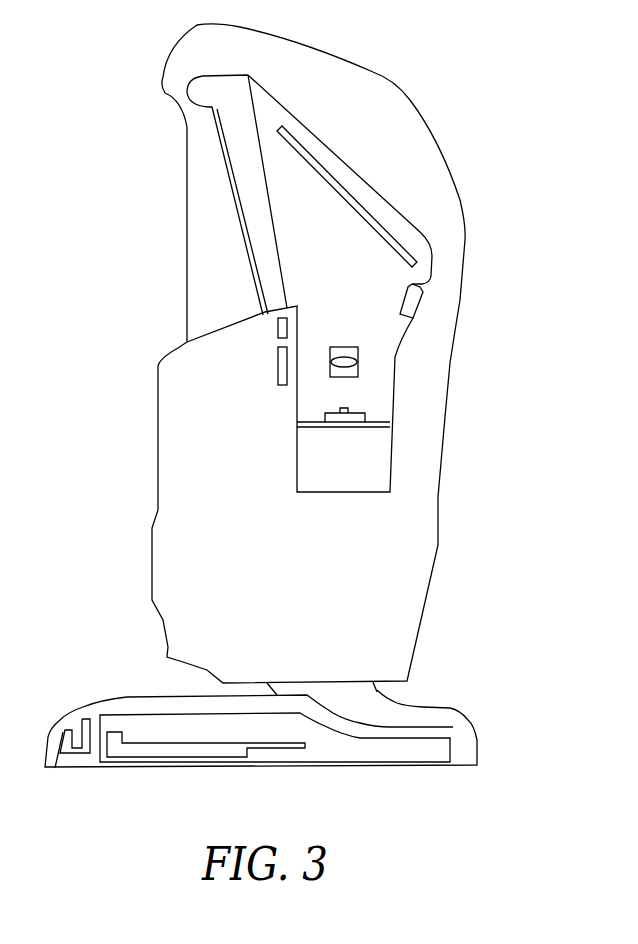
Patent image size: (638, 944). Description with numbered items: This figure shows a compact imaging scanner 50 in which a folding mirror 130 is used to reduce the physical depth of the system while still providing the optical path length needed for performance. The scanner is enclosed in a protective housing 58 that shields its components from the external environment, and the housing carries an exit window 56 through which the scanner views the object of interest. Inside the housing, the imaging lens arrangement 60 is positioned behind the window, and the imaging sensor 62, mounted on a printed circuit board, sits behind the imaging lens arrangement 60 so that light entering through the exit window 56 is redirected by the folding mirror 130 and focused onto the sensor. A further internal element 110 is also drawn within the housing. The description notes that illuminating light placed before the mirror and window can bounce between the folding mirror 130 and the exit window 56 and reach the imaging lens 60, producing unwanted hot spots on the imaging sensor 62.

The imaging scanner 50 is at (508, 644).
The exit window 56 is at (218, 163).
The protective housing 58 is at (438, 502).
The imaging lens arrangement 60 is at (358, 367).
The imaging sensor 62 is at (353, 408).
The retention tab 110 is at (415, 312).
The folding mirror 130 is at (343, 183).